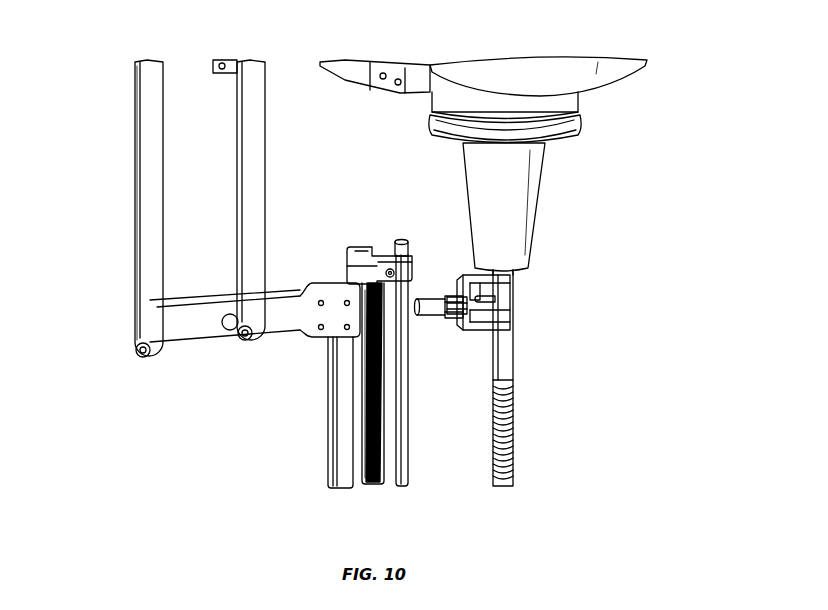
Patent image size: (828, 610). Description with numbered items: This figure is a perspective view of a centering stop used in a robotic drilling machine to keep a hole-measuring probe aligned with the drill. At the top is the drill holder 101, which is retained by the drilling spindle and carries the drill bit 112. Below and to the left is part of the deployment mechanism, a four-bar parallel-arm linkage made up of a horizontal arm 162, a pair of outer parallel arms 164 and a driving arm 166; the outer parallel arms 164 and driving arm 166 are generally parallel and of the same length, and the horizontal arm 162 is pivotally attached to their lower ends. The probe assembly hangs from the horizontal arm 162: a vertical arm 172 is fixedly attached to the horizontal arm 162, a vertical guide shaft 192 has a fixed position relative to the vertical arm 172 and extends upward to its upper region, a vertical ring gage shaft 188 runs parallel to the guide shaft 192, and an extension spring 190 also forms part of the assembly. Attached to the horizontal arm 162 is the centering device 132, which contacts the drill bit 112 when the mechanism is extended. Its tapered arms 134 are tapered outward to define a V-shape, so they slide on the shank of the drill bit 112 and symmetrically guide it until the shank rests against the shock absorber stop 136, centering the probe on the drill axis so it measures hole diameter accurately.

The drill holder 101 is at (448, 113).
The drill bit 112 is at (498, 352).
The centering device 132 is at (462, 360).
The tapered arms 134 is at (490, 290).
The shock absorber stop 136 is at (510, 305).
The horizontal arm 162 is at (200, 327).
The outer parallel arms 164 is at (148, 147).
The driving arm 166 is at (258, 146).
The vertical arm 172 is at (342, 444).
The vertical ring gage shaft 188 is at (403, 380).
The extension spring 190 is at (372, 346).
The vertical guide shaft 192 is at (368, 382).